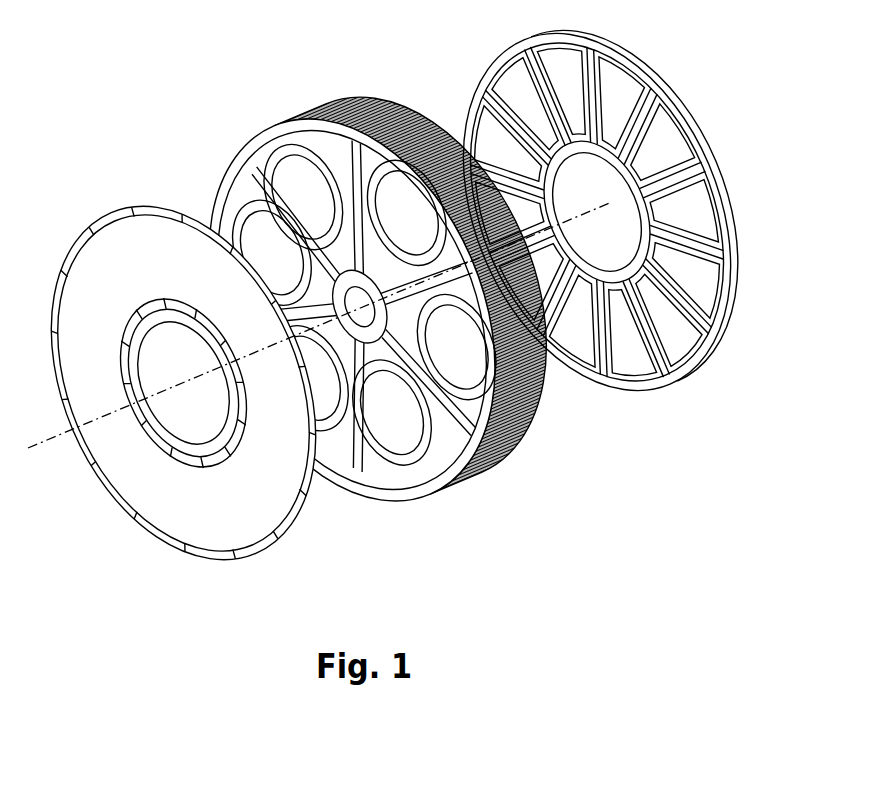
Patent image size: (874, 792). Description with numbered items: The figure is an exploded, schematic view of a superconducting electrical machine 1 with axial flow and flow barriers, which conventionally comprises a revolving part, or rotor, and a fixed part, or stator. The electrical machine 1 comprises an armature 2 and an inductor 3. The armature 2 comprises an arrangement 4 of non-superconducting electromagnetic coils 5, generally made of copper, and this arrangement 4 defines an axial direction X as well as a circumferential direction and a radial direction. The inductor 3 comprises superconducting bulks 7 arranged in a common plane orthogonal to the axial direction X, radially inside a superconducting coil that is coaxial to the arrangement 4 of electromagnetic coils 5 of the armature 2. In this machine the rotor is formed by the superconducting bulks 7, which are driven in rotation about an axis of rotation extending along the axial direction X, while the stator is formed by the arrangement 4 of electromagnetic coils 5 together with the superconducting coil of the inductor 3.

The electrical machine 1 is at (219, 123).
The armature 2 is at (493, 67).
The inductor 3 is at (321, 104).
The arrangement of non-superconducting electromagnetic coils 4 is at (230, 527).
The non-superconducting electromagnetic coils 5 is at (683, 377).
The superconducting bulks 7 is at (400, 443).
The axial direction X is at (37, 447).